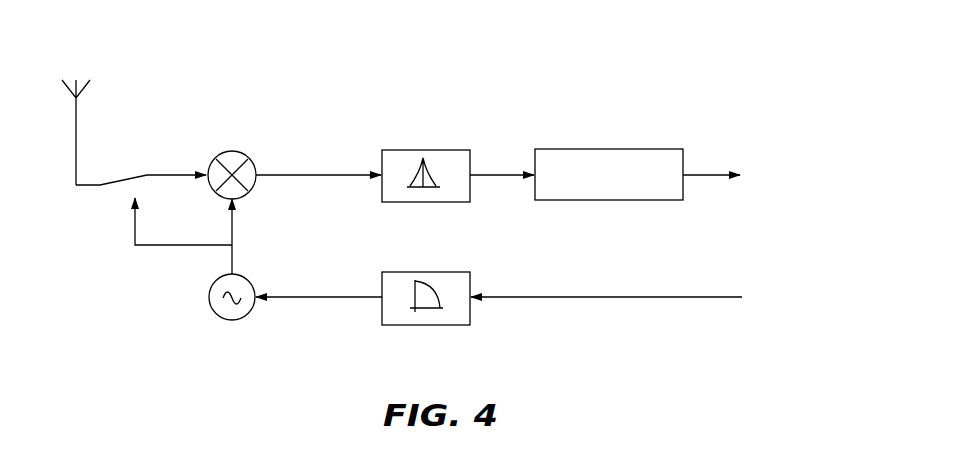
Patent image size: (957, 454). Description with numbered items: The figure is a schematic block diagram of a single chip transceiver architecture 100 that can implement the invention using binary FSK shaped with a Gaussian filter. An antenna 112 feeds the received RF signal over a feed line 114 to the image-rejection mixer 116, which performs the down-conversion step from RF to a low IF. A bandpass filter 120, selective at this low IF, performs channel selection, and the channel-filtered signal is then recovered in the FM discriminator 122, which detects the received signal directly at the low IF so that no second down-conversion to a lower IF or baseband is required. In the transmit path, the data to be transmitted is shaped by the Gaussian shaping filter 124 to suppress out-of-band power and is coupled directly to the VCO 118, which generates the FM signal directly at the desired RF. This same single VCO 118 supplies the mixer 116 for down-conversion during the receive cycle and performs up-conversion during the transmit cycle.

The FM receiver system 100 is at (595, 69).
The antenna 112 is at (76, 127).
The antenna feed line 114 is at (90, 187).
The image-rejection mixer 116 is at (235, 151).
The VCO 118 is at (211, 291).
The bandpass filter 120 is at (425, 202).
The FM discriminator 122 is at (615, 200).
The Gaussian shaping filter 124 is at (425, 325).